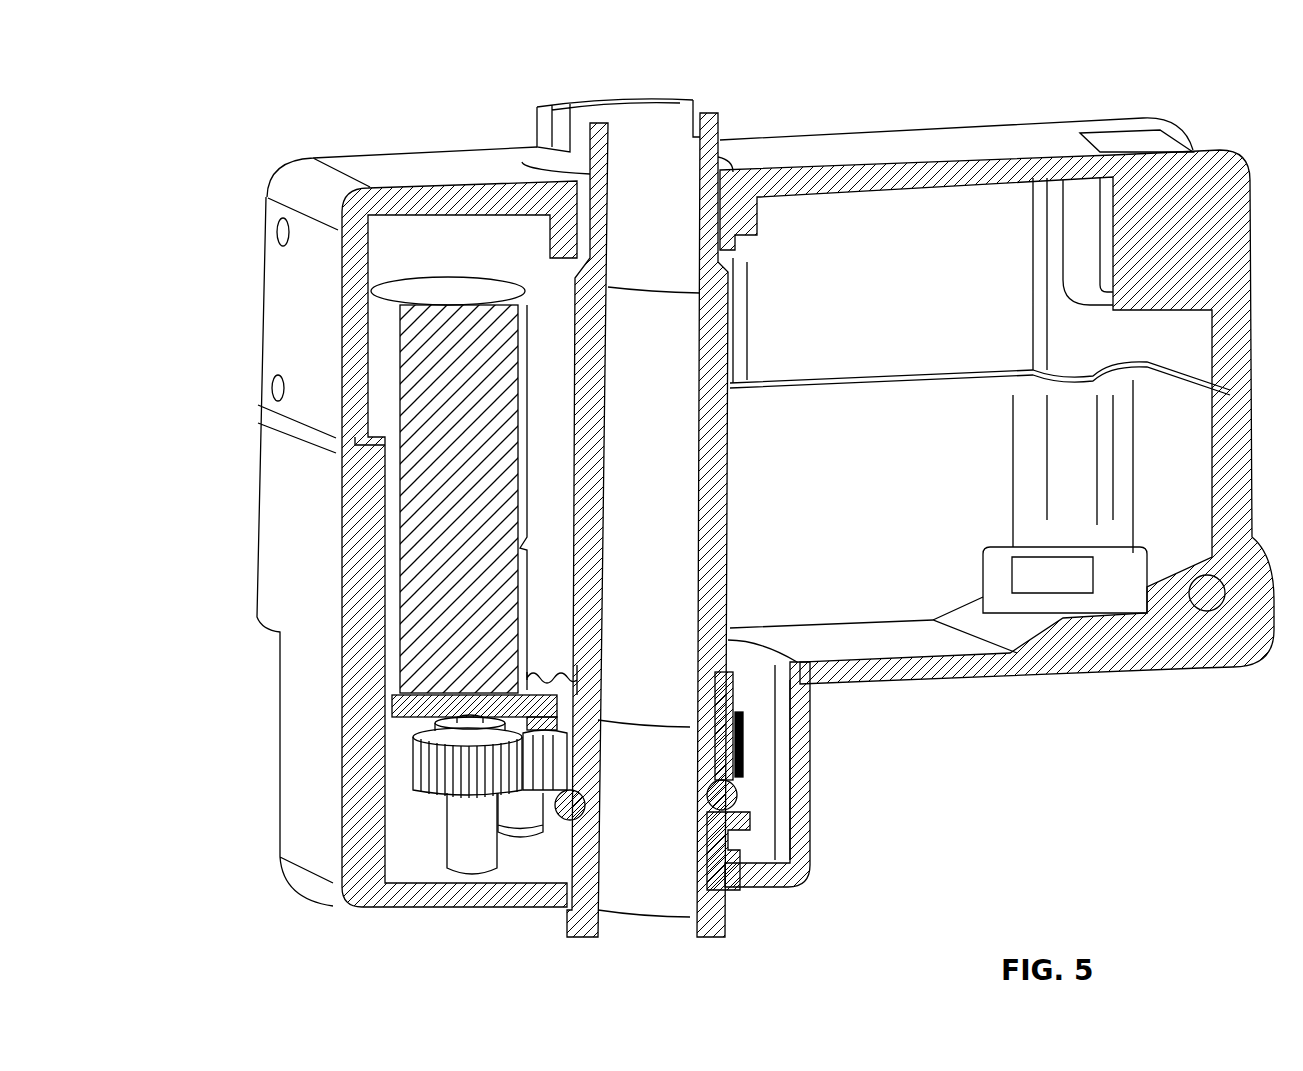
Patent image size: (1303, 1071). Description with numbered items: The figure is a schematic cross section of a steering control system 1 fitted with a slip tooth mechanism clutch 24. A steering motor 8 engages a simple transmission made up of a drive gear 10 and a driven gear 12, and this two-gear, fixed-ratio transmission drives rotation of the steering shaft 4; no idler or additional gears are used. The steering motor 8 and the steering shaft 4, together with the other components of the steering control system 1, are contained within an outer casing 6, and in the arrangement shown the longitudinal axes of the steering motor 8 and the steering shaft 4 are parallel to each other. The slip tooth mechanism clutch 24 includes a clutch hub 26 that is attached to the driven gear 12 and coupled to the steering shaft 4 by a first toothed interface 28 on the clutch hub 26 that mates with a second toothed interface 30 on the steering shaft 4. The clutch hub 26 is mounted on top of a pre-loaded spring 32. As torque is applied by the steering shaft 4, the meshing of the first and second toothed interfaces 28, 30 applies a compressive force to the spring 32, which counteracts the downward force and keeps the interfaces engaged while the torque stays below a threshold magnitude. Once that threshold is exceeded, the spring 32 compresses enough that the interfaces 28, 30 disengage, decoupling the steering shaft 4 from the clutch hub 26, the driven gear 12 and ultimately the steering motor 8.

The steering control system 1 is at (238, 100).
The steering shaft 4 is at (720, 367).
The outer casing 6 is at (1183, 128).
The steering motor 8 is at (423, 508).
The drive gear 10 is at (417, 758).
The driven gear 12 is at (537, 750).
The slip tooth mechanism clutch 24 is at (757, 707).
The clutch hub 26 is at (728, 762).
The first toothed interface 28 is at (530, 663).
The second toothed interface 30 is at (550, 677).
The pre-loaded spring 32 is at (553, 797).